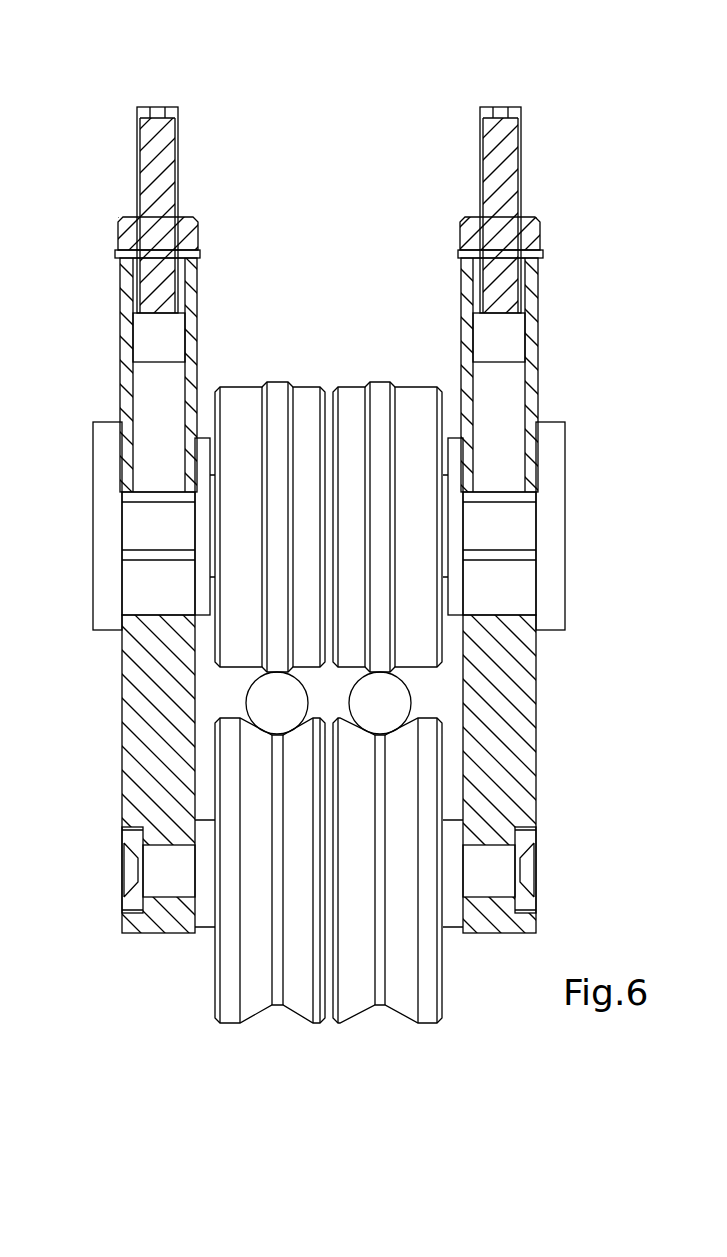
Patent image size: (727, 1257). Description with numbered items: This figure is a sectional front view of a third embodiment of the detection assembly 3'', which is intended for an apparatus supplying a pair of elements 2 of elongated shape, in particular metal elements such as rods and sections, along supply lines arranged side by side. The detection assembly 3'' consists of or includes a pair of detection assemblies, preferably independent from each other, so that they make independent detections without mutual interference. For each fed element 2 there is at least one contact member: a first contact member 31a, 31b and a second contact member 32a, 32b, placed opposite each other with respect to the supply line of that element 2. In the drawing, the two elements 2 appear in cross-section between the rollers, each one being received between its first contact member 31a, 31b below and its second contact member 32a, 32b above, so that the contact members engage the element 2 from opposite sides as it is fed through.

The detection assembly 3'' is at (363, 628).
The second contact member 32a is at (241, 387).
The second contact member 32b is at (417, 387).
The first contact member 31a is at (217, 993).
The first contact member 31b is at (360, 1018).
The element 2 is at (258, 702).